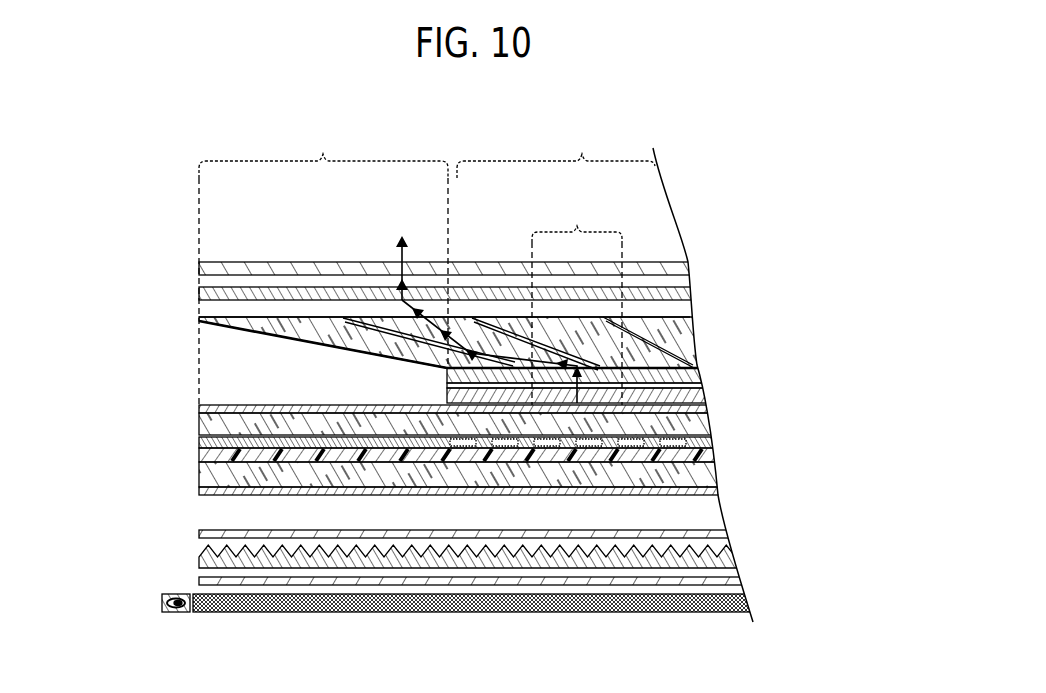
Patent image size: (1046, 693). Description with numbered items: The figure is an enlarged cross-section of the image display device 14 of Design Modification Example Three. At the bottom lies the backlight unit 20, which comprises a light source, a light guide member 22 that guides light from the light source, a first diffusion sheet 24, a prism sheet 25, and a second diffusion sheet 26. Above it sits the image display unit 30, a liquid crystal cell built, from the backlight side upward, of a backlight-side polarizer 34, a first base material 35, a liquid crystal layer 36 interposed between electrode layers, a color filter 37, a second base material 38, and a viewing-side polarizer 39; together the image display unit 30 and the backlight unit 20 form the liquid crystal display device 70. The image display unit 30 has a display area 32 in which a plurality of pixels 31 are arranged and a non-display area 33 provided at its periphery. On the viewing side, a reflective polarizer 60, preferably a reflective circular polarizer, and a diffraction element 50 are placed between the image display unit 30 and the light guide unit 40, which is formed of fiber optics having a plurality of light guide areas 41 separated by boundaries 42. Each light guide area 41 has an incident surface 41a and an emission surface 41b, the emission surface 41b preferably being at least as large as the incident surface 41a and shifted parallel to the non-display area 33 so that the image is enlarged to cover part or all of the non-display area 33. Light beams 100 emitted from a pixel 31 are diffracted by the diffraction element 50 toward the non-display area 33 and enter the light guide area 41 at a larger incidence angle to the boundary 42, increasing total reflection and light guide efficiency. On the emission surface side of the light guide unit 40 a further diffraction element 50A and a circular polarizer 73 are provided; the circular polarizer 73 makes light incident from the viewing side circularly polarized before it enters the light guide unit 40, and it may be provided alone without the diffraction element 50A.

The image display device 14 is at (130, 152).
The liquid crystal display device 70 is at (457, 522).
The image display unit 30 is at (468, 464).
The backlight unit 20 is at (487, 598).
The light guide member 22 is at (745, 603).
The first diffusion sheet 24 is at (738, 581).
The prism sheet 25 is at (728, 556).
The second diffusion sheet 26 is at (722, 534).
The backlight-side polarizer 34 is at (717, 491).
The first base material 35 is at (716, 475).
The liquid crystal layer 36 is at (713, 456).
The color filter 37 is at (712, 442).
The second base material 38 is at (708, 425).
The viewing-side polarizer 39 is at (703, 408).
The pixel 31 is at (577, 216).
The display area 32 is at (556, 149).
The non-display area 33 is at (323, 147).
The light guide unit 40 is at (451, 298).
The light guide area 41 is at (466, 298).
The incident surface 41a is at (433, 360).
The emission surface 41b is at (245, 318).
The boundary 42 is at (378, 330).
The diffraction element 50 is at (690, 352).
The diffraction element 50A is at (680, 293).
The reflective polarizer 60 is at (705, 388).
The circular polarizer 73 is at (676, 268).
The light beams 100 is at (458, 298).